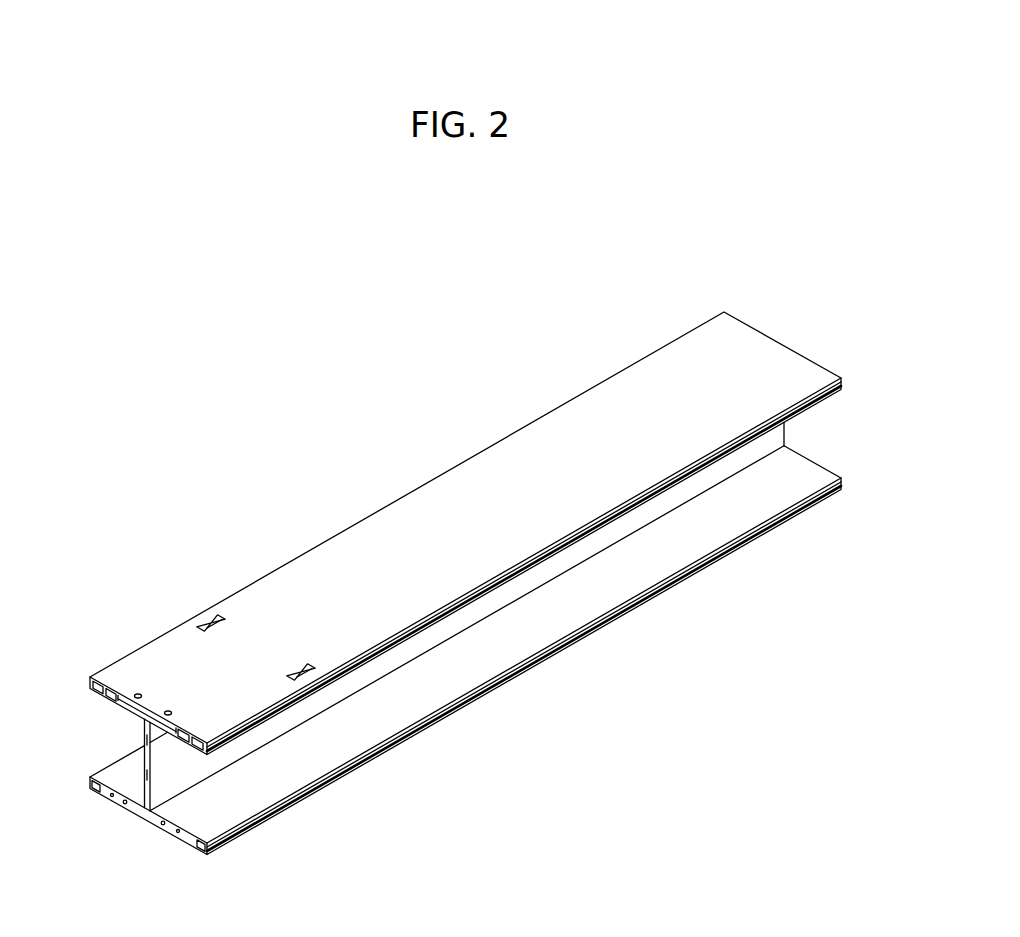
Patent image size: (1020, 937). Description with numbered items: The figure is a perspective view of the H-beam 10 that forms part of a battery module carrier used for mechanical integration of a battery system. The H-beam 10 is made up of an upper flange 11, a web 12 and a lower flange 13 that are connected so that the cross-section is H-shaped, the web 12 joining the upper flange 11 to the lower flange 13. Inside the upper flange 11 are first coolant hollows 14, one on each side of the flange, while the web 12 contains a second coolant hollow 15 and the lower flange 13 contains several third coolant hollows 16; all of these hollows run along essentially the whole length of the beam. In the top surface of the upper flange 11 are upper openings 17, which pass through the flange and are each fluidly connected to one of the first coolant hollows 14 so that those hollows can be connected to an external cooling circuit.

The H-beam 10 is at (390, 456).
The upper flange 11 is at (117, 669).
The web 12 is at (167, 777).
The lower flange 13 is at (212, 823).
The first coolant hollows 14 is at (132, 707).
The second coolant hollow 15 is at (141, 751).
The third coolant hollows 16 is at (160, 823).
The upper openings 17 is at (168, 711).